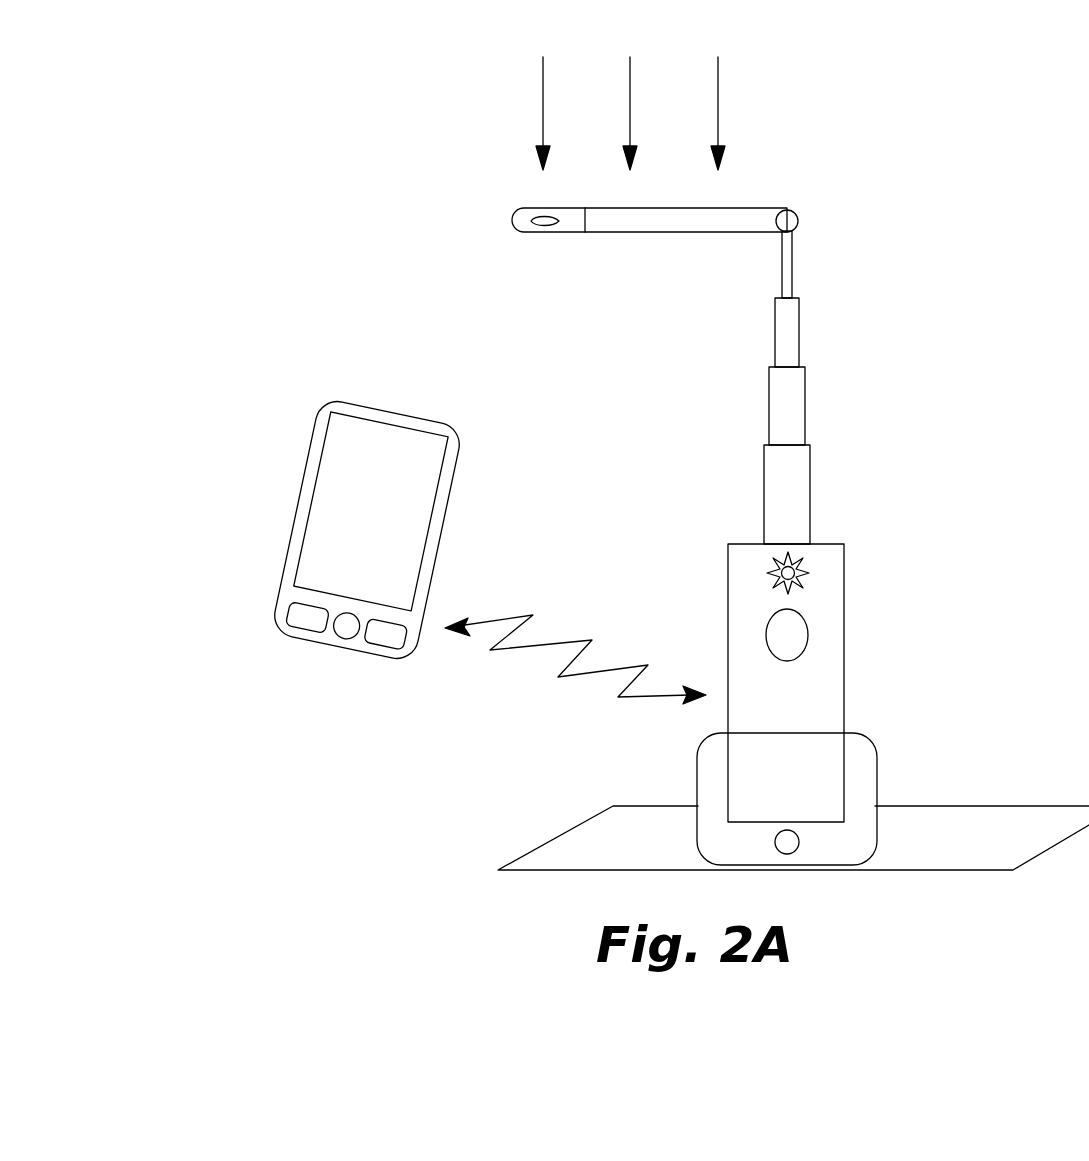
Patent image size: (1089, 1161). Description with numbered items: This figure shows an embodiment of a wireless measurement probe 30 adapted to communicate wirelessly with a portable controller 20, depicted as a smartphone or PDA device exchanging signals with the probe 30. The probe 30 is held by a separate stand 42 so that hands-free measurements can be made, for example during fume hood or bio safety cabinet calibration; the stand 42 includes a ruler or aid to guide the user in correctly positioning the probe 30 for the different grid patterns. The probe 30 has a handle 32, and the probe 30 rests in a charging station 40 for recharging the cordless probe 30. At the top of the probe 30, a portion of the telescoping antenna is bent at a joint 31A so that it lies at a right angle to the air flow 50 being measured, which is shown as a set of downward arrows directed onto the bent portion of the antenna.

The portable controller 20 is at (297, 499).
The wireless measurement probe 30 is at (798, 221).
The joint 31A is at (842, 200).
The handle 32 is at (825, 592).
The charging station 40 is at (876, 742).
The stand 42 is at (1059, 815).
The air flow 50 is at (466, 150).